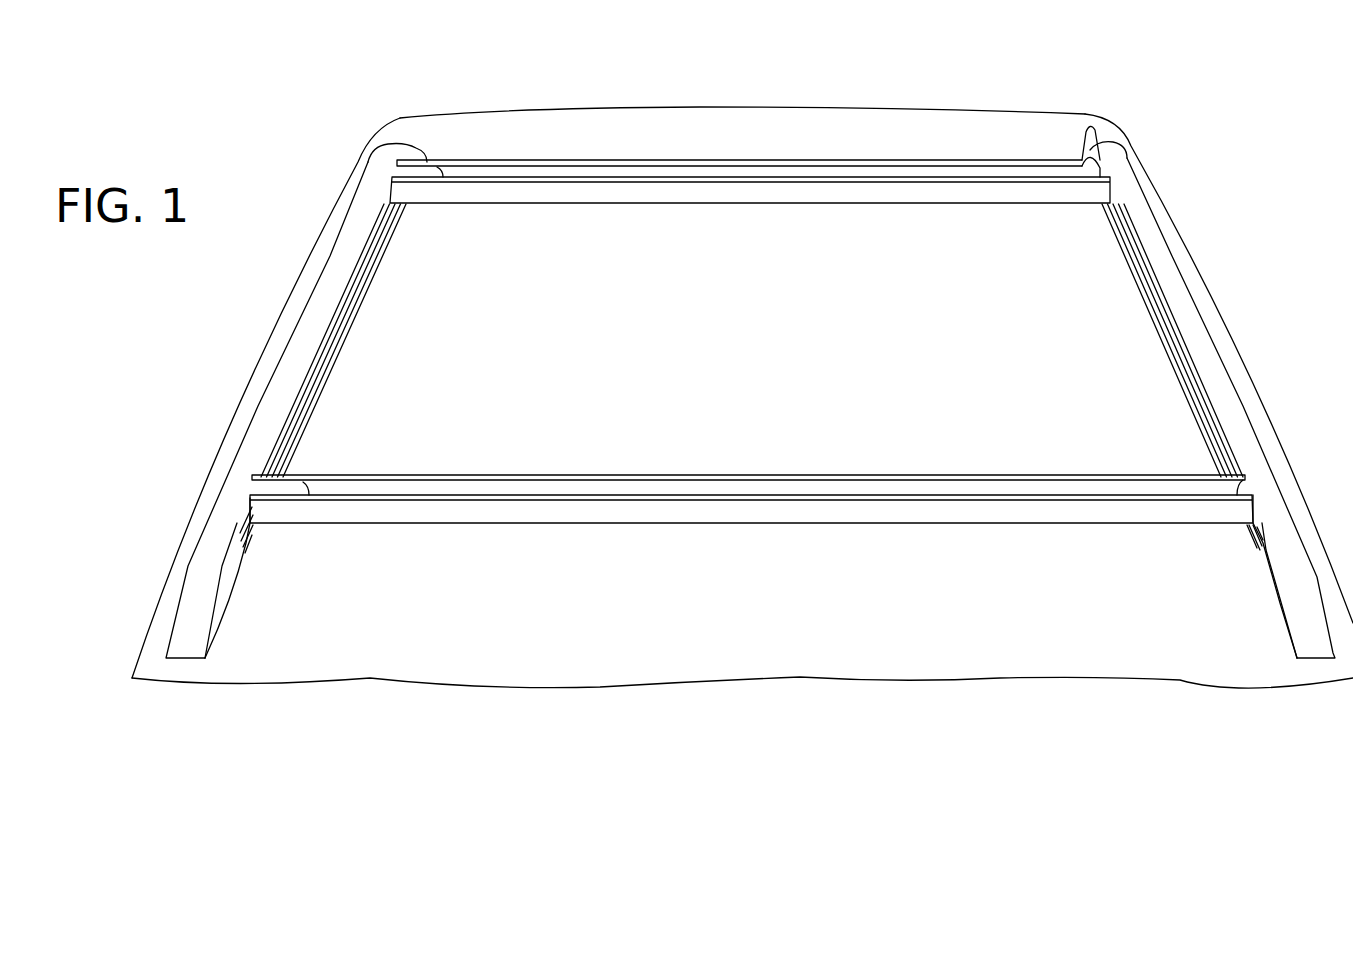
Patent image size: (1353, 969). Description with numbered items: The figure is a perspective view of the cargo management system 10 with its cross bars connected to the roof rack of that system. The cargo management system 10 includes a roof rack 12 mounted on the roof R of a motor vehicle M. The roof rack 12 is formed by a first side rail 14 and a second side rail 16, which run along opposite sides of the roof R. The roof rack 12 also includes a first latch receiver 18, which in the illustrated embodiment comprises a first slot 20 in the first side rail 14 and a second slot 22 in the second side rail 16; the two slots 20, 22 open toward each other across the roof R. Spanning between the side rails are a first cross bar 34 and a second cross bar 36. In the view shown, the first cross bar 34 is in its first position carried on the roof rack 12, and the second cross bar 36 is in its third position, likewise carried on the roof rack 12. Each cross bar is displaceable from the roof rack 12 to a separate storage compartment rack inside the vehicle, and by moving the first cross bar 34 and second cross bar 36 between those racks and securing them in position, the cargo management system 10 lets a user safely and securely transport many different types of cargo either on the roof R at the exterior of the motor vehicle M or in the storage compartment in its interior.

The cargo management system 10 is at (1166, 116).
The roof rack 12 is at (201, 406).
The first side rail 14 is at (300, 342).
The second side rail 16 is at (1185, 302).
The first latch receiver 18 is at (377, 330).
The first slot 20 is at (312, 382).
The second slot 22 is at (1187, 374).
The first cross bar 34 is at (705, 518).
The second cross bar 36 is at (743, 195).
The roof R is at (705, 132).
The motor vehicle M is at (153, 610).